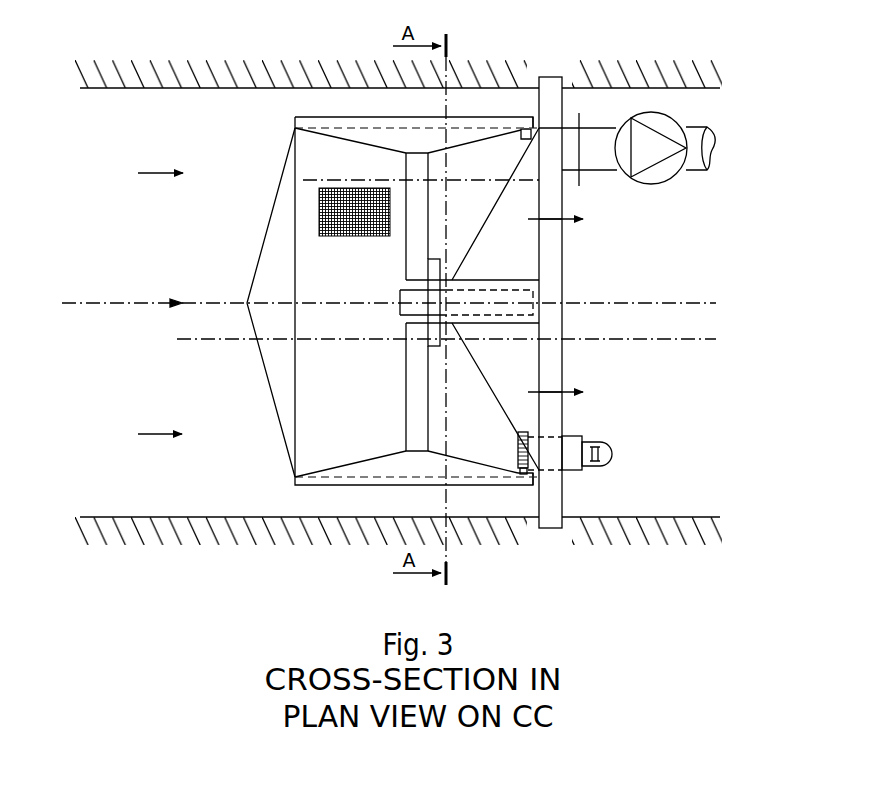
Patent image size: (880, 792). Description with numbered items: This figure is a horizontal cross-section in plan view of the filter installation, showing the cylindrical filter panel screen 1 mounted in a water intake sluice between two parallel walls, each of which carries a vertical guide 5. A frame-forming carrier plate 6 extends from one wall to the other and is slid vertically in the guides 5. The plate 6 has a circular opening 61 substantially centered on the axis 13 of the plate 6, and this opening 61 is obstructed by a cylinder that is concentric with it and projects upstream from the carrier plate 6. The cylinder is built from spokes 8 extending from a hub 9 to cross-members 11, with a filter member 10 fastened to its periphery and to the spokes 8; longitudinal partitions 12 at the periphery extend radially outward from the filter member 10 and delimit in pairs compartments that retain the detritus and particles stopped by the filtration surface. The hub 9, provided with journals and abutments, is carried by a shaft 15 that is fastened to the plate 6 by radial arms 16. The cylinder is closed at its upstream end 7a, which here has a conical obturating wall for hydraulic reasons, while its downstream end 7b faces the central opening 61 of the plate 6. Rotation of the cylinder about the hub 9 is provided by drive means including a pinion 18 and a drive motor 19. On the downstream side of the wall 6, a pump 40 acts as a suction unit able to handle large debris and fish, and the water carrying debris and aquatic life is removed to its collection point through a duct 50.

The cylindrical filter panel screen 1 is at (263, 473).
The vertical guide 5 is at (547, 77).
The carrier plate 6 is at (553, 343).
The upstream end 7a is at (262, 238).
The downstream end 7b is at (532, 260).
The spokes 8 is at (406, 242).
The hub 9 is at (426, 320).
The filter member 10 is at (319, 188).
The cross-members 11 is at (375, 142).
The longitudinal partitions 12 is at (347, 486).
The axis 13 is at (553, 300).
The shaft 15 is at (488, 312).
The radial arms 16 is at (483, 227).
The pinion 18 is at (528, 432).
The drive motor 19 is at (597, 470).
The pump 40 is at (650, 187).
The duct 50 is at (702, 172).
The circular opening 61 is at (550, 237).